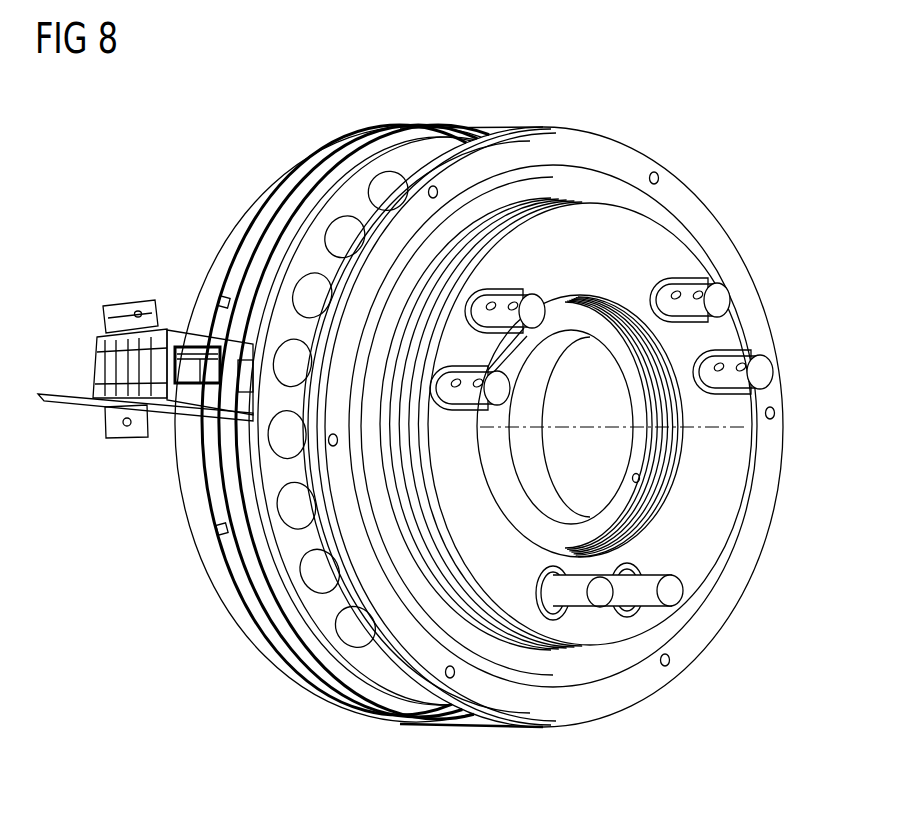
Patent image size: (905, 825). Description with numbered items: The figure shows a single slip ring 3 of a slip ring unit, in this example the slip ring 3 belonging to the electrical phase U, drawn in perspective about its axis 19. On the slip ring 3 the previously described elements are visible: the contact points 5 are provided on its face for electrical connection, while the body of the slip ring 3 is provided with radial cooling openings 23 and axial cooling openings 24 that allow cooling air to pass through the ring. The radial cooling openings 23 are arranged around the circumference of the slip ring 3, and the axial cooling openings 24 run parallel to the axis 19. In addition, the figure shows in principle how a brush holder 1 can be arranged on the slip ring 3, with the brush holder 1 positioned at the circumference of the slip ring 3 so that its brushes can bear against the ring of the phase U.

The electrical phase U is at (432, 114).
The brush holder 1 is at (74, 294).
The slip ring 3 is at (293, 215).
The contact points 5 is at (727, 297).
The axis 19 is at (733, 431).
The radial cooling openings 23 is at (213, 490).
The axial cooling openings 24 is at (343, 590).